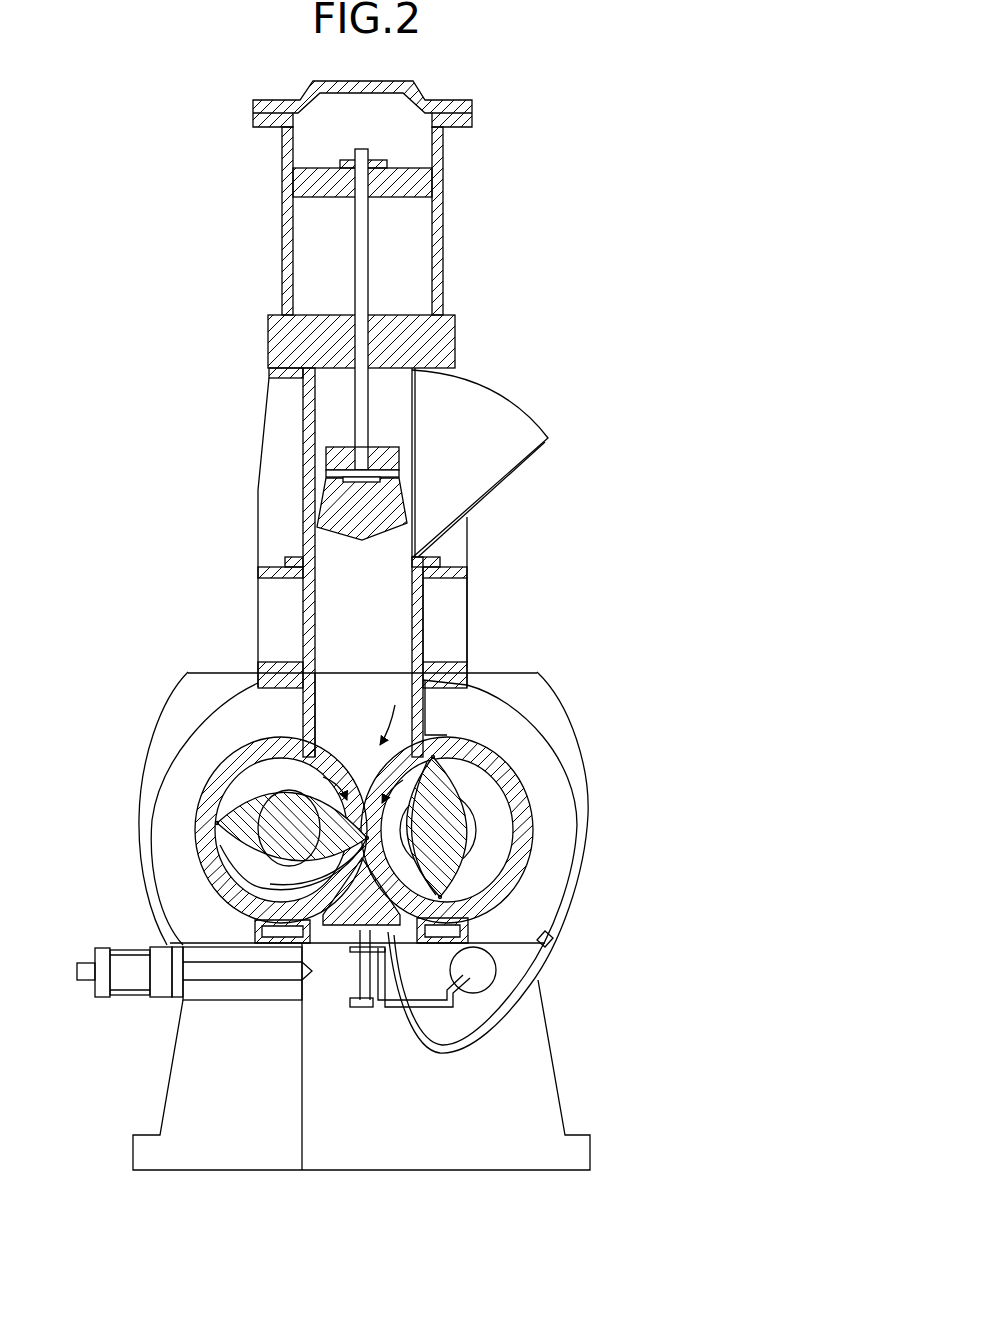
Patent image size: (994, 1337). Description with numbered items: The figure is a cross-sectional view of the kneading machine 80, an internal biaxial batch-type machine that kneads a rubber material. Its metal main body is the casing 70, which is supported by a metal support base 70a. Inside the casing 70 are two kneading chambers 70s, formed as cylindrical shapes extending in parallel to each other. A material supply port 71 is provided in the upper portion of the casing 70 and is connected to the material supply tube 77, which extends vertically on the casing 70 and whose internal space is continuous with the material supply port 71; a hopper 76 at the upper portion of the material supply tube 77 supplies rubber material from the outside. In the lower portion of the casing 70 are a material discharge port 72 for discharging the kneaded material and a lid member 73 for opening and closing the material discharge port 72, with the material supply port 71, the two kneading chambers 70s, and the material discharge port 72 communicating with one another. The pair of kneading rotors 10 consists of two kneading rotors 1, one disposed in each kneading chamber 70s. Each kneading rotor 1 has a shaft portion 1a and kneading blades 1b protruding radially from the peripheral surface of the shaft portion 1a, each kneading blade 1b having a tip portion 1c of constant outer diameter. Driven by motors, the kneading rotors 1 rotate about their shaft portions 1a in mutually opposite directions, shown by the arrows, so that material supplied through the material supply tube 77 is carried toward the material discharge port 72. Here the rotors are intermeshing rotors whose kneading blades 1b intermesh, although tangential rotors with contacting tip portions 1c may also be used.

The kneading machine 80 is at (572, 82).
The hopper 76 is at (497, 413).
The material supply tube 77 is at (424, 607).
The material supply port 71 is at (438, 703).
The casing 70 is at (510, 760).
The kneading chambers 70s is at (220, 872).
The support base 70a is at (530, 945).
The pair of kneading rotors 10 is at (268, 768).
The kneading rotor 1 is at (467, 868).
The shaft portion 1a is at (268, 797).
The kneading blade 1b is at (243, 868).
The tip portion 1c is at (228, 843).
The lid member 73 is at (345, 945).
The material discharge port 72 is at (388, 950).